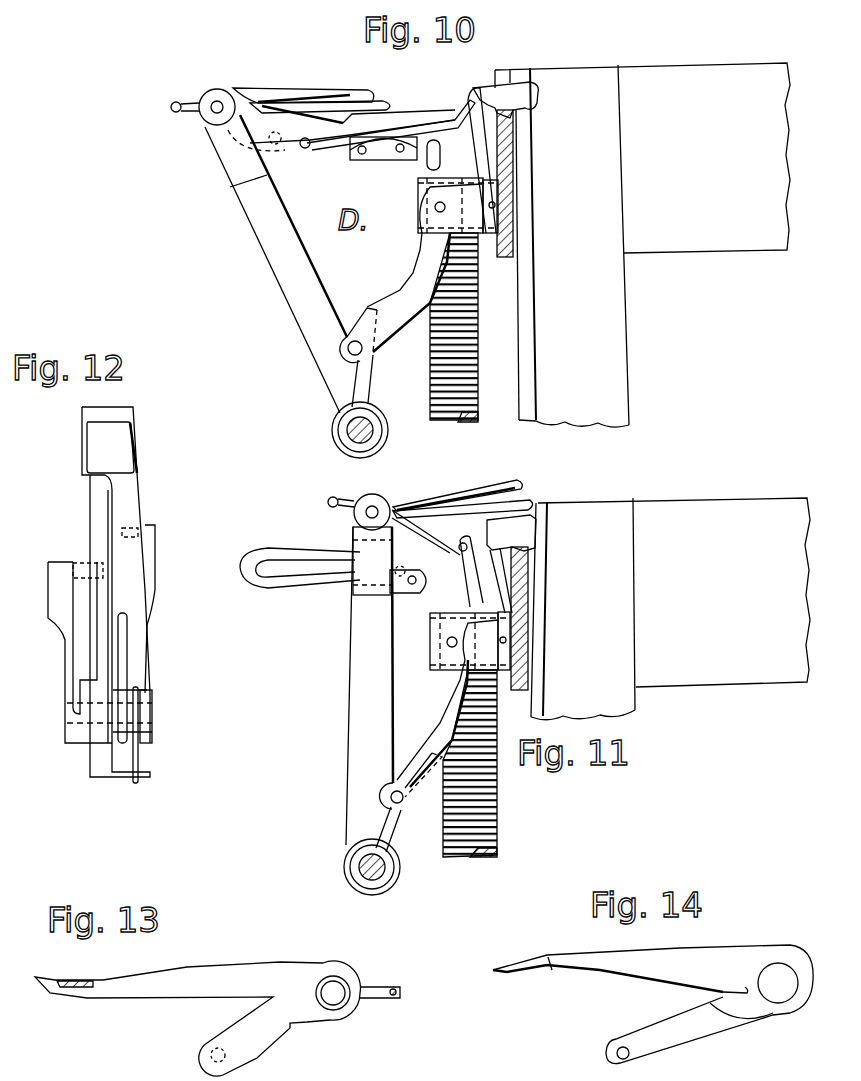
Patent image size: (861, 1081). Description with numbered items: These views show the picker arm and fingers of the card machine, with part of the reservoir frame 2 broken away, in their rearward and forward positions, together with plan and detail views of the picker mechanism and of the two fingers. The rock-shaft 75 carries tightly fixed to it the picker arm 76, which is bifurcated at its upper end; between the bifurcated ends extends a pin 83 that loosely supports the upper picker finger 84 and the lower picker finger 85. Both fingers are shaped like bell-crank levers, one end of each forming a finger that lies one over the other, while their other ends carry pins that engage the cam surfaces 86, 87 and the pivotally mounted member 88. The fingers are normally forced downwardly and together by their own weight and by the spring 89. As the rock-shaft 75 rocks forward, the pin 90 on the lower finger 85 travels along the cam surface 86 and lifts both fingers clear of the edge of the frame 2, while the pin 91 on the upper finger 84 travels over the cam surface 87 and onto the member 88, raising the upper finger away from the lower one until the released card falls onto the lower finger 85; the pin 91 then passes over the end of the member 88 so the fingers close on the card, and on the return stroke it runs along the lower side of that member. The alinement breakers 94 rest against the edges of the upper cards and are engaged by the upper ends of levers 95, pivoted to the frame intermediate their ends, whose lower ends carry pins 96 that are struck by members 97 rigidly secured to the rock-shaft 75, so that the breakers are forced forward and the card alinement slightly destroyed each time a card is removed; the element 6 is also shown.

In FIG. 10, the reservoir frame 2 is at (538, 367).
In FIG. 11, the reservoir frame 2 is at (545, 633).
In FIG. 10, the coil spring 6 is at (473, 337).
In FIG. 11, the coil spring 6 is at (492, 808).
In FIG. 10, the rock-shaft 75 is at (347, 430).
In FIG. 11, the rock-shaft 75 is at (363, 867).
In FIG. 10, the picker arm 76 is at (275, 285).
In FIG. 11, the picker arm 76 is at (358, 718).
In FIG. 10, the pin 83 is at (217, 101).
In FIG. 11, the pin 83 is at (372, 506).
In FIG. 10, the upper picker finger 84 is at (265, 92).
In FIG. 11, the upper picker finger 84 is at (428, 490).
In FIG. 12, the upper picker finger 84 is at (130, 498).
In FIG. 14, the upper picker finger 84 is at (612, 958).
In FIG. 10, the lower picker finger 85 is at (372, 99).
In FIG. 11, the lower picker finger 85 is at (462, 526).
In FIG. 12, the lower picker finger 85 is at (95, 508).
In FIG. 13, the lower picker finger 85 is at (228, 972).
In FIG. 10, the cam surface 86 is at (332, 138).
In FIG. 11, the cam surface 86 is at (298, 557).
In FIG. 10, the cam surface 87 is at (385, 140).
In FIG. 11, the cam surface 87 is at (408, 584).
In FIG. 10, the pivotally mounted member 88 is at (427, 120).
In FIG. 11, the pivotally mounted member 88 is at (478, 571).
In FIG. 10, the spring 89 is at (177, 102).
In FIG. 11, the spring 89 is at (340, 492).
In FIG. 12, the spring 89 is at (138, 760).
In FIG. 10, the pin 90 is at (275, 144).
In FIG. 11, the pin 90 is at (394, 572).
In FIG. 12, the pin 90 is at (82, 566).
In FIG. 13, the pin 90 is at (225, 1058).
In FIG. 10, the pin 91 is at (305, 148).
In FIG. 11, the pin 91 is at (463, 545).
In FIG. 12, the pin 91 is at (130, 537).
In FIG. 14, the pin 91 is at (617, 1053).
In FIG. 10, the alinement breakers 94 is at (528, 103).
In FIG. 11, the alinement breakers 94 is at (525, 532).
In FIG. 10, the levers 95 is at (420, 253).
In FIG. 11, the levers 95 is at (448, 705).
In FIG. 10, the pins 96 is at (348, 347).
In FIG. 11, the pins 96 is at (389, 797).
In FIG. 10, the members 97 is at (367, 374).
In FIG. 11, the members 97 is at (405, 823).